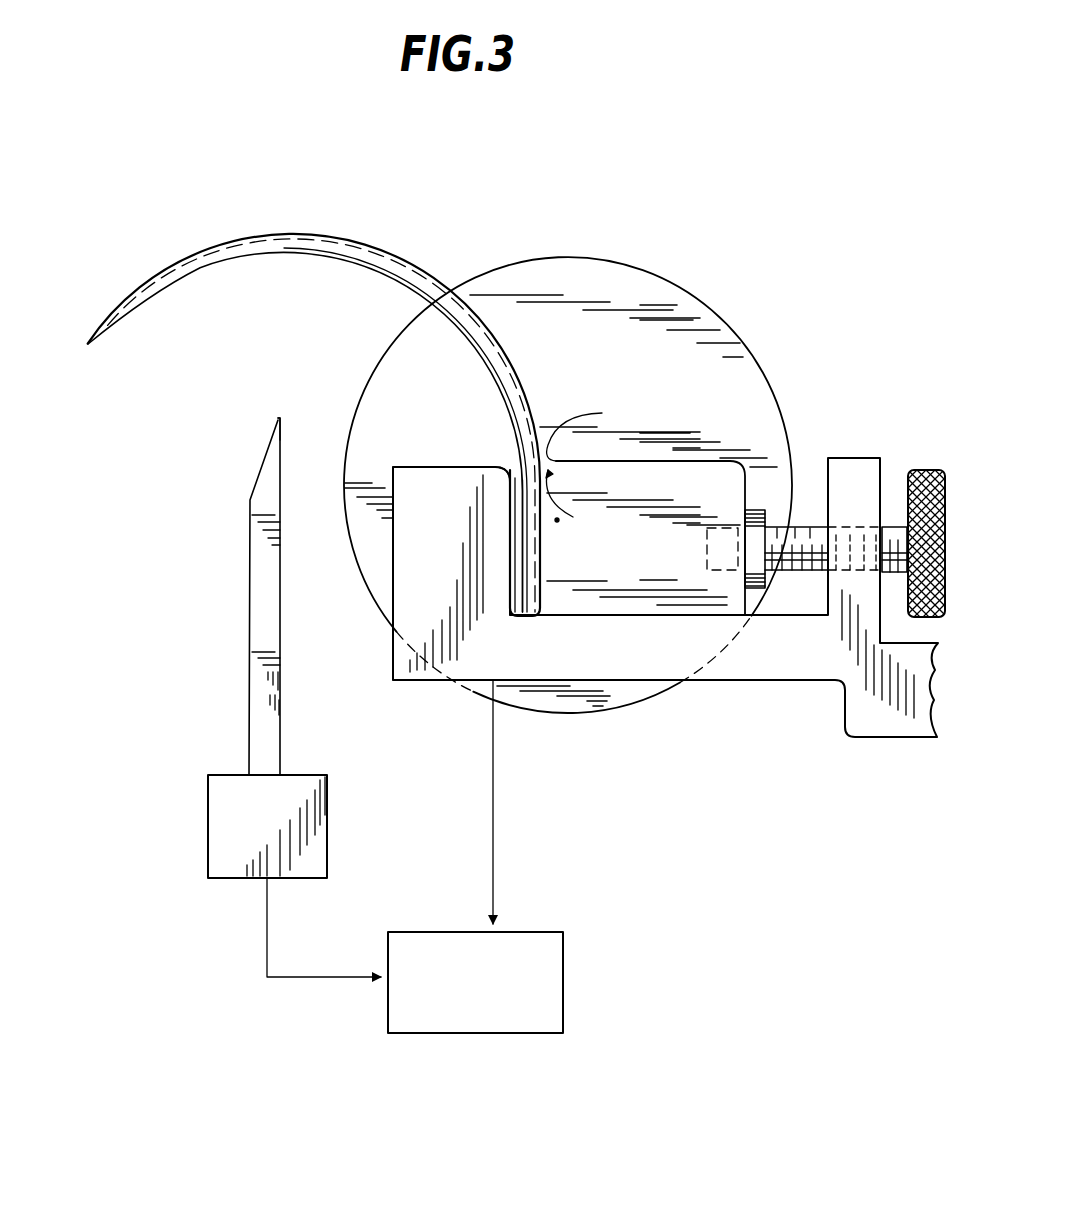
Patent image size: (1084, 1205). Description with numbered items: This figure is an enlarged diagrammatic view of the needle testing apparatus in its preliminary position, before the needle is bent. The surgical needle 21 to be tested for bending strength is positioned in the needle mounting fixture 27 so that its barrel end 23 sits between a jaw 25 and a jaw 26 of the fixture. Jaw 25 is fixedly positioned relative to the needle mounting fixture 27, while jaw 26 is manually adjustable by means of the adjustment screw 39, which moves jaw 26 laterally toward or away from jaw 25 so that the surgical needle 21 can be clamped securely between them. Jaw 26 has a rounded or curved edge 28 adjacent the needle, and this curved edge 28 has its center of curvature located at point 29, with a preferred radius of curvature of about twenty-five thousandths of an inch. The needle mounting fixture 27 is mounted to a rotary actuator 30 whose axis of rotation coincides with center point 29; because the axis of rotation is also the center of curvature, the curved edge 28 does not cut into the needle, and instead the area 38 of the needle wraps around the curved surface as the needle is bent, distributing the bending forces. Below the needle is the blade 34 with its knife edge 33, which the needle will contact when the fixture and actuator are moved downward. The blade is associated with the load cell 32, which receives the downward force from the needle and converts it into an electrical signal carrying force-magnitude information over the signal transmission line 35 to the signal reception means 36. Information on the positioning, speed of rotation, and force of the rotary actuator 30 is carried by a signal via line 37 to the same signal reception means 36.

The surgical needle 21 is at (260, 250).
The barrel end 23 is at (521, 620).
The jaw 25 is at (451, 573).
The jaw 26 is at (642, 538).
The needle mounting fixture 27 is at (636, 662).
The curved edge 28 is at (602, 413).
The center of curvature 29 is at (590, 478).
The rotary actuator 30 is at (741, 336).
The load cell 32 is at (267, 826).
The knife edge 33 is at (278, 418).
The blade 34 is at (254, 574).
The signal transmission line 35 is at (267, 974).
The signal reception means 36 is at (475, 982).
The line 37 is at (497, 856).
The area 38 is at (510, 393).
The adjustment screw 39 is at (925, 470).